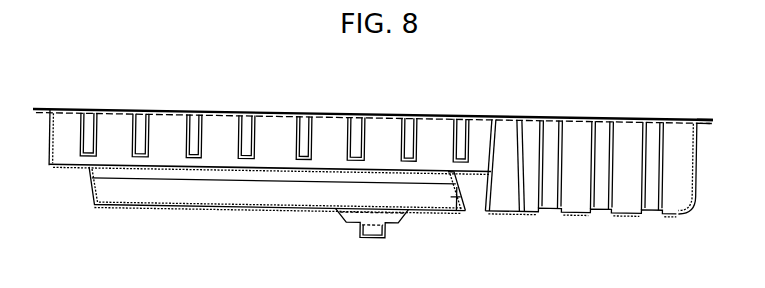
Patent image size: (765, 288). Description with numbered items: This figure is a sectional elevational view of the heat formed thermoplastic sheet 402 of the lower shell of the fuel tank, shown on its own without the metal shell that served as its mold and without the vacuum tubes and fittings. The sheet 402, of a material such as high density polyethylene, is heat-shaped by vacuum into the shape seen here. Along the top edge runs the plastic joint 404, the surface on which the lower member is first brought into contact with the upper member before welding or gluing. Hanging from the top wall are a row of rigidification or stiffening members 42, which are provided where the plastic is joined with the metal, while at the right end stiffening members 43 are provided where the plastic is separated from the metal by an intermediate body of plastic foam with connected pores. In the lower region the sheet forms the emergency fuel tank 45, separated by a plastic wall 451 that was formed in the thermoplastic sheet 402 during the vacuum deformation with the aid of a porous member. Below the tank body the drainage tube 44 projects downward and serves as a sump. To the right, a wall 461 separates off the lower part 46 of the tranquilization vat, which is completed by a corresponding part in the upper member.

The rigidification or stiffening members 42 is at (247, 125).
The stiffening members 43 is at (652, 200).
The drainage tube 44 is at (372, 228).
The emergency fuel tank 45 is at (240, 193).
The plastic wall 451 is at (458, 195).
The lower part of the tranquilization vat 46 is at (627, 133).
The wall 461 is at (507, 195).
The thermoplastic sheet 402 is at (697, 165).
The plastic joint 404 is at (704, 119).